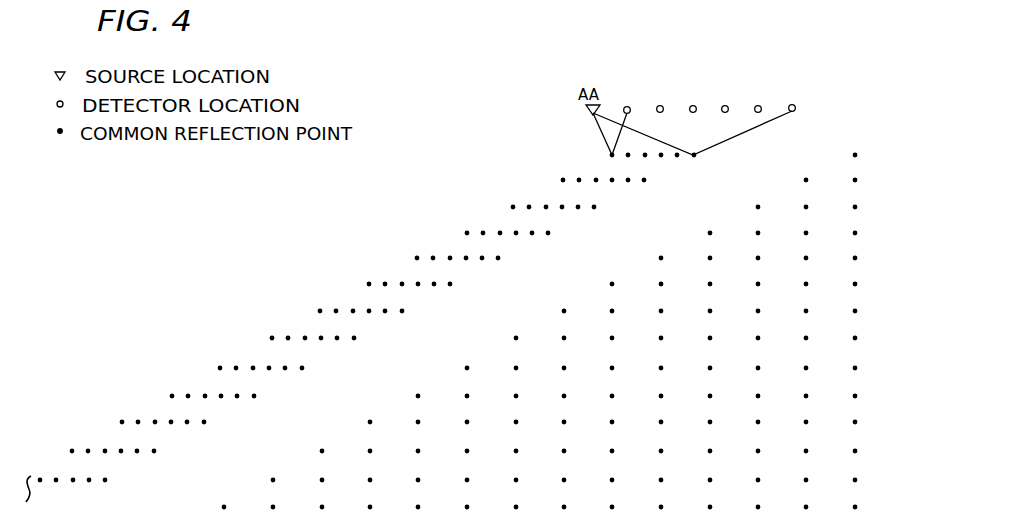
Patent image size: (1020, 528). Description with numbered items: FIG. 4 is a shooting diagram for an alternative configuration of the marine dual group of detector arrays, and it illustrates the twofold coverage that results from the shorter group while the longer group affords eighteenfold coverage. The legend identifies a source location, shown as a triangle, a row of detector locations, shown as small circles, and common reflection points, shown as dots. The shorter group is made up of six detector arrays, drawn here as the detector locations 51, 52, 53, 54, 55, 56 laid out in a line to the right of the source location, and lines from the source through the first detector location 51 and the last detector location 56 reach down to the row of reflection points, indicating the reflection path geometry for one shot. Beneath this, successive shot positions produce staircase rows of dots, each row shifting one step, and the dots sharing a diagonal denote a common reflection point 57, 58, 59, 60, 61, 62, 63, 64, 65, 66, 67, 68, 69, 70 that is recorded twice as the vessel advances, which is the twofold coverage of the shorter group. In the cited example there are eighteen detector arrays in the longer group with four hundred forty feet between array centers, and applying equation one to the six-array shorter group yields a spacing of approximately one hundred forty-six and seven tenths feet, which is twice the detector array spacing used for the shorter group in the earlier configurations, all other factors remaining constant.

The detector location 51 is at (366, 303).
The detector location 52 is at (662, 99).
The detector location 53 is at (694, 99).
The detector location 54 is at (727, 99).
The detector location 55 is at (759, 99).
The detector location 56 is at (793, 98).
The common reflection point 57 is at (542, 321).
The common reflection point 58 is at (590, 339).
The common reflection point 59 is at (613, 352).
The common reflection point 60 is at (639, 365).
The common reflection point 61 is at (662, 378).
The common reflection point 62 is at (682, 391).
The common reflection point 63 is at (712, 404).
The common reflection point 64 is at (736, 418).
The common reflection point 65 is at (754, 433).
The common reflection point 66 is at (778, 447).
The common reflection point 67 is at (808, 460).
The common reflection point 68 is at (827, 474).
The common reflection point 69 is at (862, 489).
The common reflection point 70 is at (881, 507).